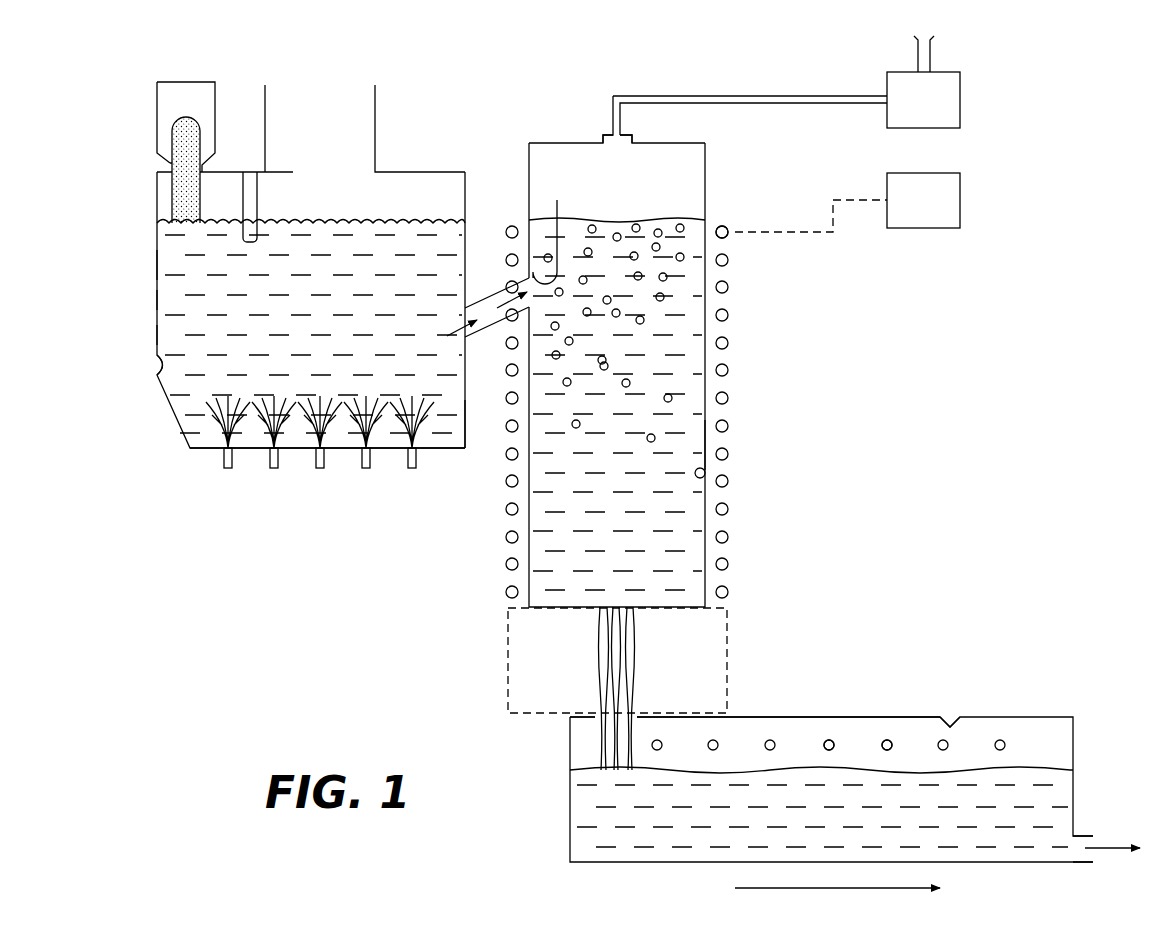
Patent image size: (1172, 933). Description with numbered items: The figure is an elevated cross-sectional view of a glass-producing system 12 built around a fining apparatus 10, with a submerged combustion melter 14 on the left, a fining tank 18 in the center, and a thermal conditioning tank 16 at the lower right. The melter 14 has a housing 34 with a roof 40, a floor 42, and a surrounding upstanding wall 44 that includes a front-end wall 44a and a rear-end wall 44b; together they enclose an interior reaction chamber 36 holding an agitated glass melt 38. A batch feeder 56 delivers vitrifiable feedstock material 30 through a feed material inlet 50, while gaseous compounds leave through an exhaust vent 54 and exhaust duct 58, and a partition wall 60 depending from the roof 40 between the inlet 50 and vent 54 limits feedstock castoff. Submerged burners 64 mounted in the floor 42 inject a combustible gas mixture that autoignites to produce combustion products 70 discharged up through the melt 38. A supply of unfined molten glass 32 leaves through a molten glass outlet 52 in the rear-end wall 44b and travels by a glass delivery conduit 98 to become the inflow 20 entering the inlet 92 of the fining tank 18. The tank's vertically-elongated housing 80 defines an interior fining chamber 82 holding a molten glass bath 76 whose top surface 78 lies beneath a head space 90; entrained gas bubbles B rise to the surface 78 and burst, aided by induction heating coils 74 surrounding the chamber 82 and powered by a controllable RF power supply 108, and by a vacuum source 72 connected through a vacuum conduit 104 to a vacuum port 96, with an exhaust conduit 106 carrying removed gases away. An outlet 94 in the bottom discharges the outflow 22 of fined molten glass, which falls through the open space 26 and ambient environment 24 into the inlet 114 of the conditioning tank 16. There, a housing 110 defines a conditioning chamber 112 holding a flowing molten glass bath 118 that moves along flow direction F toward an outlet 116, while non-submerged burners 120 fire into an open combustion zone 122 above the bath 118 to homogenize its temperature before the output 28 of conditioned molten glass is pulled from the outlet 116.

The fining apparatus 10 is at (597, 45).
The glass-producing system 12 is at (145, 35).
The submerged combustion melter 14 is at (128, 212).
The thermal conditioning tank 16 is at (888, 700).
The fining tank 18 is at (710, 168).
The inflow of unfined molten glass 20 is at (527, 283).
The outflow of fined molten glass 22 is at (640, 669).
The ambient environment 24 is at (568, 689).
The open space 26 is at (728, 632).
The output of conditioned molten glass 28 is at (1108, 848).
The vitrifiable feedstock material 30 is at (198, 220).
The supply of unfined molten glass 32 is at (467, 332).
The housing 34 is at (157, 300).
The interior reaction chamber 36 is at (157, 372).
The glass melt 38 is at (332, 305).
The roof 40 is at (432, 172).
The floor 42 is at (297, 452).
The surrounding upstanding wall 44 is at (157, 335).
The front-end wall 44a is at (157, 266).
The rear-end wall 44b is at (470, 440).
The feed material inlet 50 is at (170, 175).
The molten glass outlet 52 is at (455, 316).
The exhaust vent 54 is at (293, 172).
The batch feeder 56 is at (212, 90).
The exhaust duct 58 is at (266, 96).
The partition wall 60 is at (258, 201).
The submerged burners 64 is at (226, 470).
The combustion products 70 is at (216, 411).
The vacuum source 72 is at (938, 113).
The induction heating coils 74 is at (728, 228).
The molten glass bath 76 is at (668, 502).
The top surface 78 is at (700, 218).
The vertically-elongated housing 80 is at (708, 447).
The interior fining chamber 82 is at (700, 473).
The head space 90 is at (572, 143).
The inlet 92 is at (551, 228).
The outlet 94 is at (596, 612).
The vacuum port 96 is at (625, 144).
The glass delivery conduit 98 is at (497, 294).
The vacuum conduit 104 is at (728, 104).
The exhaust conduit 106 is at (931, 50).
The controllable RF power supply 108 is at (945, 213).
The housing 110 is at (757, 717).
The conditioning chamber 112 is at (950, 722).
The inlet 114 is at (597, 730).
The outlet 116 is at (1090, 862).
The flowing molten glass bath 118 is at (836, 829).
The non-submerged burners 120 is at (883, 742).
The open combustion zone 122 is at (1062, 757).
The gas bubbles B is at (640, 320).
The flow direction F is at (837, 888).